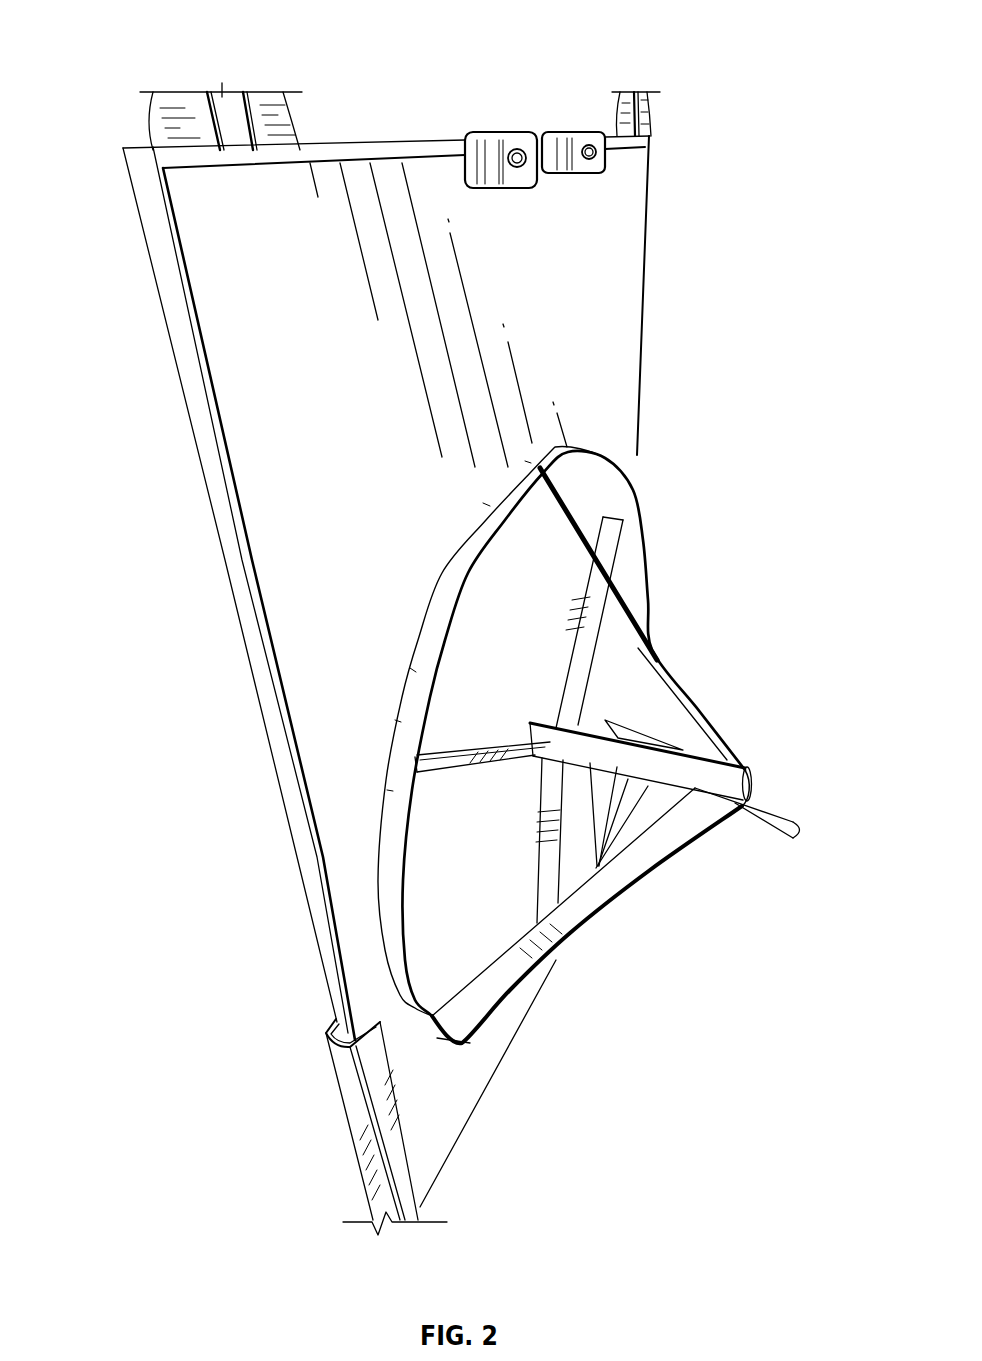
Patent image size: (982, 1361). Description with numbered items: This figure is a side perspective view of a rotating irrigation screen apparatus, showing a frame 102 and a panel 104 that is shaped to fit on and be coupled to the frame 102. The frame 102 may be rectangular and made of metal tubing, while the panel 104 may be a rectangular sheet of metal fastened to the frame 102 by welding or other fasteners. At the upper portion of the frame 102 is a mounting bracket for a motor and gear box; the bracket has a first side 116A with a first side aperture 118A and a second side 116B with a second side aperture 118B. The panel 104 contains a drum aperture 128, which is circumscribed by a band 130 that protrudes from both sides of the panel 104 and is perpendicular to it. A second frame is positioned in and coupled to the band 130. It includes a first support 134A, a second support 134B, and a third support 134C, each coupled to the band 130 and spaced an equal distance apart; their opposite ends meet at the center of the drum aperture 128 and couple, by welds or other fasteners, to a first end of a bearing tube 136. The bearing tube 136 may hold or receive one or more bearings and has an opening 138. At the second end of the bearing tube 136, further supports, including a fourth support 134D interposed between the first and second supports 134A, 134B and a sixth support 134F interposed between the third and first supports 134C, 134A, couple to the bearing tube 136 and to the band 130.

The frame 102 is at (190, 352).
The panel 104 is at (623, 248).
The first side 116A is at (485, 154).
The second side 116B is at (600, 158).
The first side aperture 118A is at (518, 148).
The second side aperture 118B is at (591, 141).
The drum aperture 128 is at (500, 578).
The band 130 is at (403, 778).
The first support 134A is at (433, 750).
The second support 134B is at (613, 546).
The third support 134C is at (552, 855).
The fourth support 134D is at (642, 653).
The sixth support 134F is at (495, 980).
The bearing tube 136 is at (752, 768).
The opening 138 is at (766, 793).